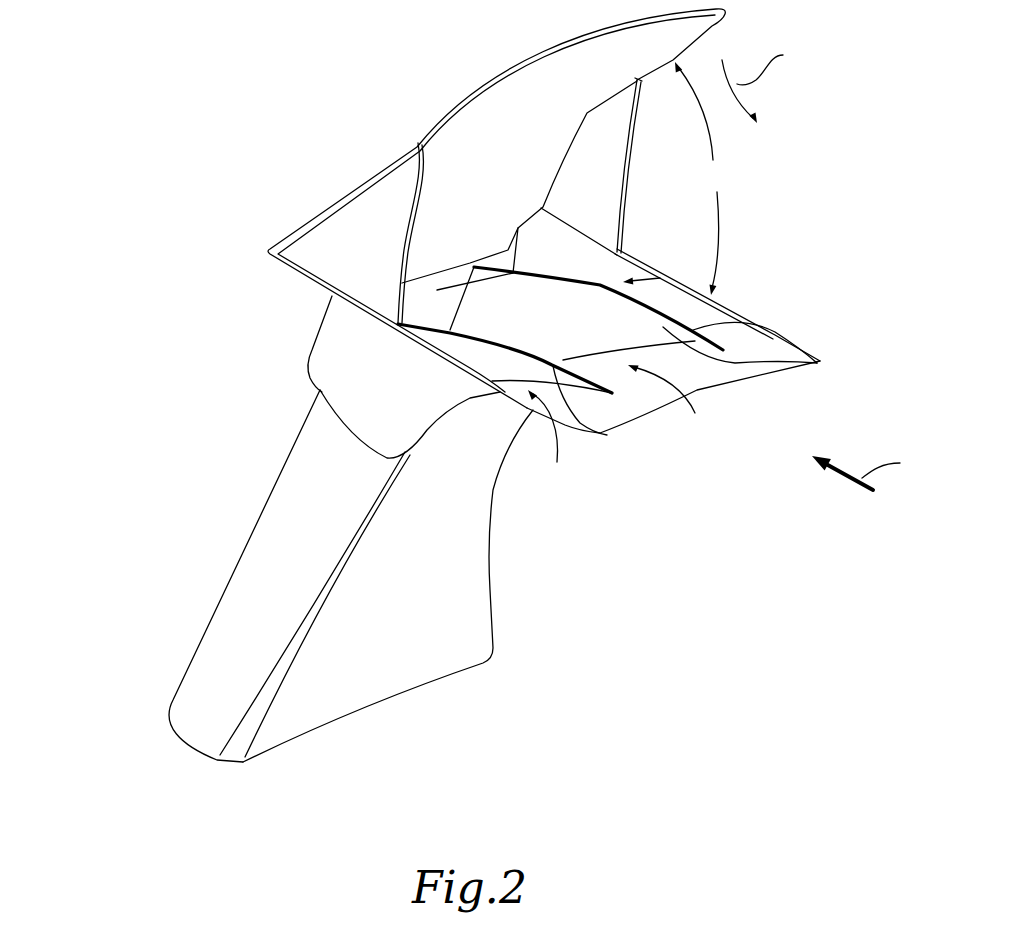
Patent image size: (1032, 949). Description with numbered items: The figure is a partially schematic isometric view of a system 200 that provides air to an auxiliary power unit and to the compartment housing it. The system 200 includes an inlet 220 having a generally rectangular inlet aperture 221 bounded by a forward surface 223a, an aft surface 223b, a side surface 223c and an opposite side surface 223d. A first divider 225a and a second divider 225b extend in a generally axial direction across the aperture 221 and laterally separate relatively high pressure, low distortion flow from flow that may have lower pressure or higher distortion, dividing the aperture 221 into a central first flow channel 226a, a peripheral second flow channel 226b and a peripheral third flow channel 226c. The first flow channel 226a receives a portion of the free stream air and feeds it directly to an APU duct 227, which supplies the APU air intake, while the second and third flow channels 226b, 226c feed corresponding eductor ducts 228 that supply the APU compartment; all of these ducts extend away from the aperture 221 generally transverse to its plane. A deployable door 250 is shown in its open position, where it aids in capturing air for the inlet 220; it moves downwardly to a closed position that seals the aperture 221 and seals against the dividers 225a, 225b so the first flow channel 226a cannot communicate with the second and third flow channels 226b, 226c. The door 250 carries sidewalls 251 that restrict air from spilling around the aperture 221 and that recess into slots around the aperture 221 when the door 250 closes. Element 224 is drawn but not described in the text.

The system 200 is at (150, 148).
The inlet 220 is at (763, 440).
The inlet aperture 221 is at (748, 227).
The forward surface 223a is at (698, 380).
The aft surface 223b is at (513, 277).
The side surface 223c is at (697, 315).
The opposite side surface 223d is at (420, 330).
The base column 224 is at (527, 527).
The first divider 225a is at (610, 434).
The second divider 225b is at (820, 363).
The first flow channel 226a is at (680, 403).
The second flow channel 226b is at (546, 440).
The third flow channel 226c is at (697, 290).
The APU duct 227 is at (263, 538).
The eductor duct 228 is at (317, 367).
The deployable door 250 is at (482, 84).
The sidewalls 251 is at (367, 212).